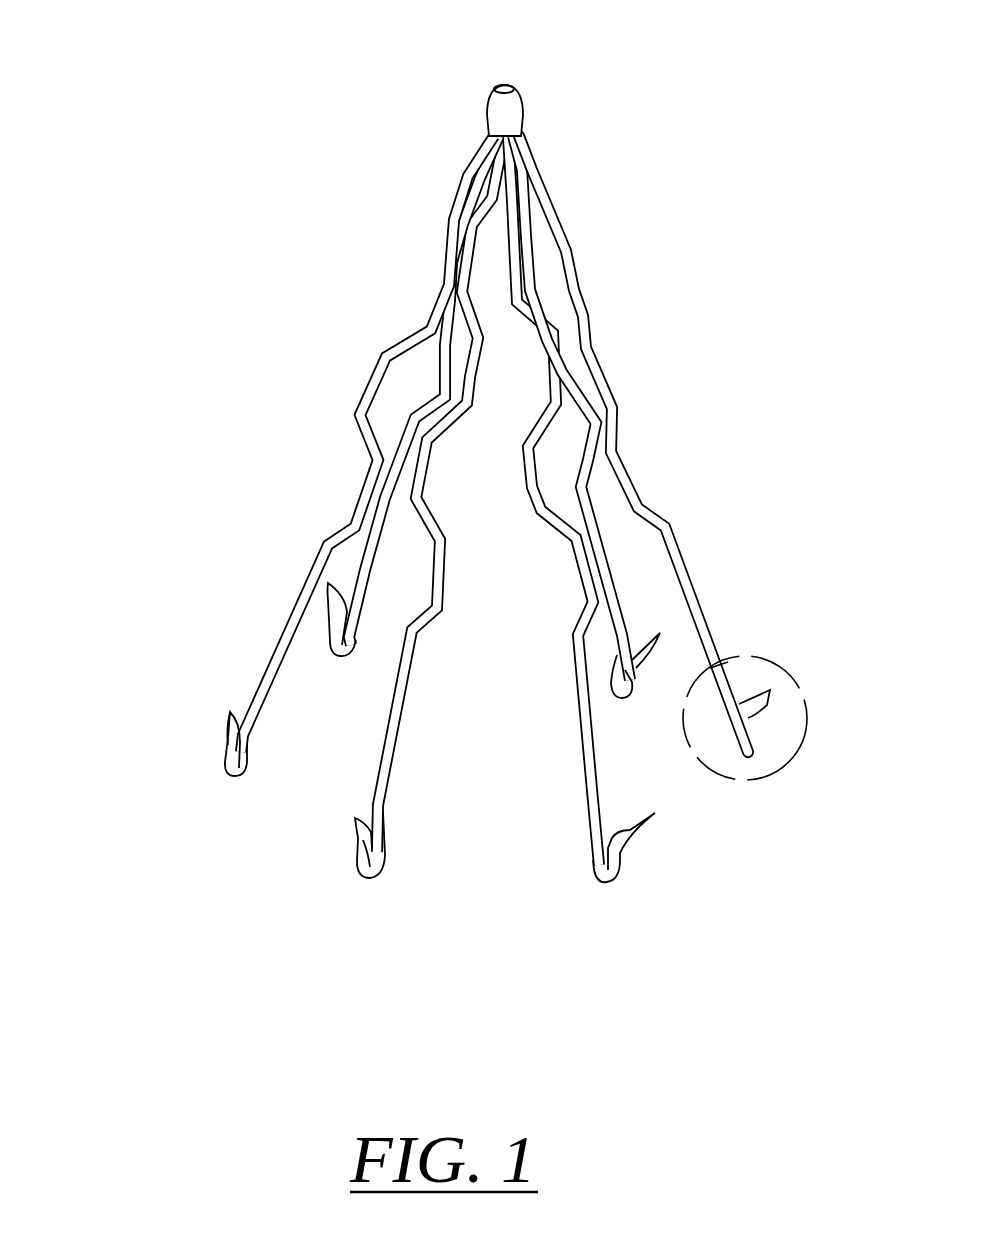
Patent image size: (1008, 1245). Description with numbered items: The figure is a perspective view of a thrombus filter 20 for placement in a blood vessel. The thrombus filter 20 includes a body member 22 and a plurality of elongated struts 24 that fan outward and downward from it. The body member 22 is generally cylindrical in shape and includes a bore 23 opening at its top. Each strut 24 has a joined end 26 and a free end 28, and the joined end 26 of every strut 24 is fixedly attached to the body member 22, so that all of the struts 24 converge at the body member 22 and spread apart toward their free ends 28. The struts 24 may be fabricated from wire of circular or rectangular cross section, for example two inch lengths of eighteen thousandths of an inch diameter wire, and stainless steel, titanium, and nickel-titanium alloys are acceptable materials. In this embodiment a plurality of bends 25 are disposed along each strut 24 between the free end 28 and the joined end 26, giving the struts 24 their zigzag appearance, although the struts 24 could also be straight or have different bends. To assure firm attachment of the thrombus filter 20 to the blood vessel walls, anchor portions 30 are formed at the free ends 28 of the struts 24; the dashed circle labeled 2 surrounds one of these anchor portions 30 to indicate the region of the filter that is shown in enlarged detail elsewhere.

The thrombus filter 20 is at (484, 451).
The body member 22 is at (502, 110).
The bore 23 is at (493, 87).
The elongated strut 24 is at (278, 456).
The bends 25 is at (678, 527).
The joined end 26 is at (447, 168).
The free end 28 is at (206, 703).
The anchor portion 30 is at (225, 768).
The detail circle of hook 2 is at (785, 670).